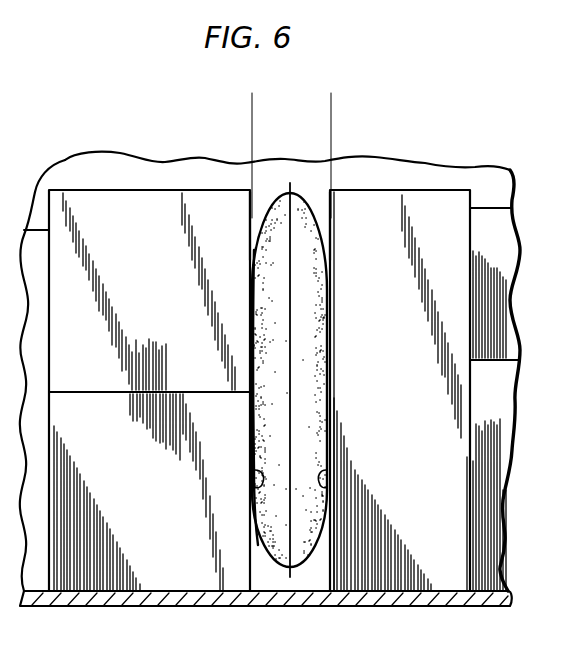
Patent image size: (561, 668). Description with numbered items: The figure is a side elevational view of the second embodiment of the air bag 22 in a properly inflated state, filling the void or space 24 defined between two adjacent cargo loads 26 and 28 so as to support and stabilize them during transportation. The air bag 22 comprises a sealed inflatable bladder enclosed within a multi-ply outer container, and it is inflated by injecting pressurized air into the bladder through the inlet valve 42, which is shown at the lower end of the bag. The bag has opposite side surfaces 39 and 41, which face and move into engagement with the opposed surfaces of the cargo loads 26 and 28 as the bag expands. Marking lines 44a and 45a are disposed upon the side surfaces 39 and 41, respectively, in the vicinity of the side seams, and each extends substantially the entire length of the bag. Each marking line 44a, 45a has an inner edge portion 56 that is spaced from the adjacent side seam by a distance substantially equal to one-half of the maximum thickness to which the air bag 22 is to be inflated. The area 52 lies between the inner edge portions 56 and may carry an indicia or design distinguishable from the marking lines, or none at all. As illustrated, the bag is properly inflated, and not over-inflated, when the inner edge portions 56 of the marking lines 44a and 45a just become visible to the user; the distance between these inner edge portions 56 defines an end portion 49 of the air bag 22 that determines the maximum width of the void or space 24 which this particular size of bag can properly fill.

The air bag 22 is at (315, 256).
The void or space 24 is at (331, 114).
The cargo load 26 is at (144, 478).
The cargo load 28 is at (418, 420).
The side surface 39 is at (259, 279).
The side surface 41 is at (318, 357).
The valve 42 is at (317, 553).
The marking line 44a is at (266, 222).
The marking line 45a is at (326, 216).
The end portion 49 is at (318, 387).
The area 52 is at (318, 312).
The inner edge portion 56 is at (256, 487).